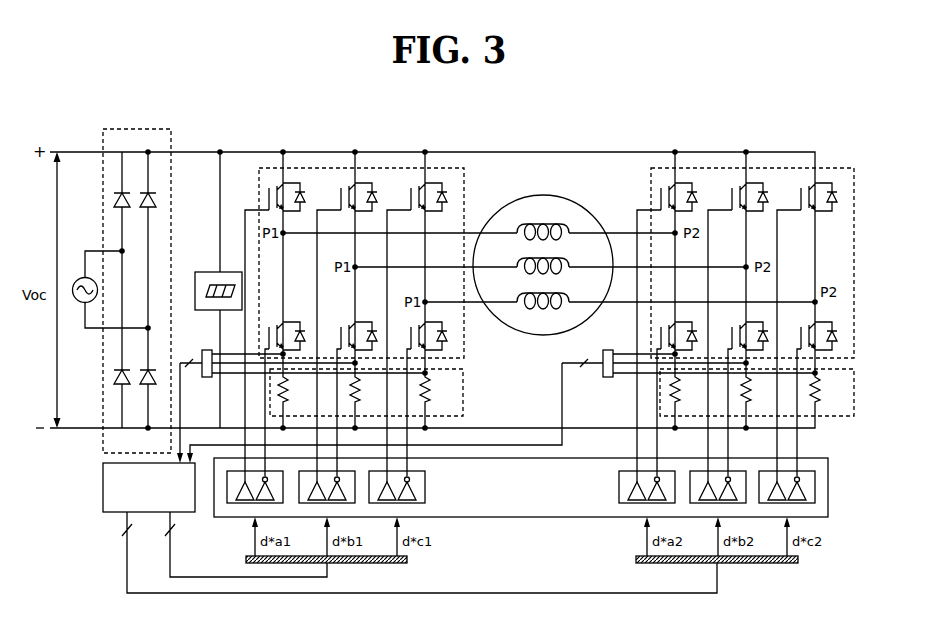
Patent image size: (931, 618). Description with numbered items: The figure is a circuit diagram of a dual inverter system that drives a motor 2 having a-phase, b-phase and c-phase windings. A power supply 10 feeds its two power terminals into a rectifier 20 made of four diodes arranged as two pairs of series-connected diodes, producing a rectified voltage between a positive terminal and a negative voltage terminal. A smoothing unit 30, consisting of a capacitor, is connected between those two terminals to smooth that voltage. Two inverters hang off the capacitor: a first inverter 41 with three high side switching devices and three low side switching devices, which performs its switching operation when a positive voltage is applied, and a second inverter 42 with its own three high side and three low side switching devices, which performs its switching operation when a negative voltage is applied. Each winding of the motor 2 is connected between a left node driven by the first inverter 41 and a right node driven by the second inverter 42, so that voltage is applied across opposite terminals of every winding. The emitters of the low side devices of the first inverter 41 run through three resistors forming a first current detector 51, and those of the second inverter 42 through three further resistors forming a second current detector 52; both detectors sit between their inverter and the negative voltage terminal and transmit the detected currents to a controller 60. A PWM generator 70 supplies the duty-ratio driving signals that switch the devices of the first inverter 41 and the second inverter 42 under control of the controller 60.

The motor 2 is at (576, 198).
The power supply 10 is at (80, 279).
The rectifier 20 is at (126, 129).
The smoothing unit 30 is at (206, 272).
The first inverter 41 is at (466, 192).
The second inverter 42 is at (838, 168).
The first current detector 51 is at (466, 392).
The second current detector 52 is at (848, 418).
The controller 60 is at (102, 487).
The PWM generator 70 is at (829, 487).